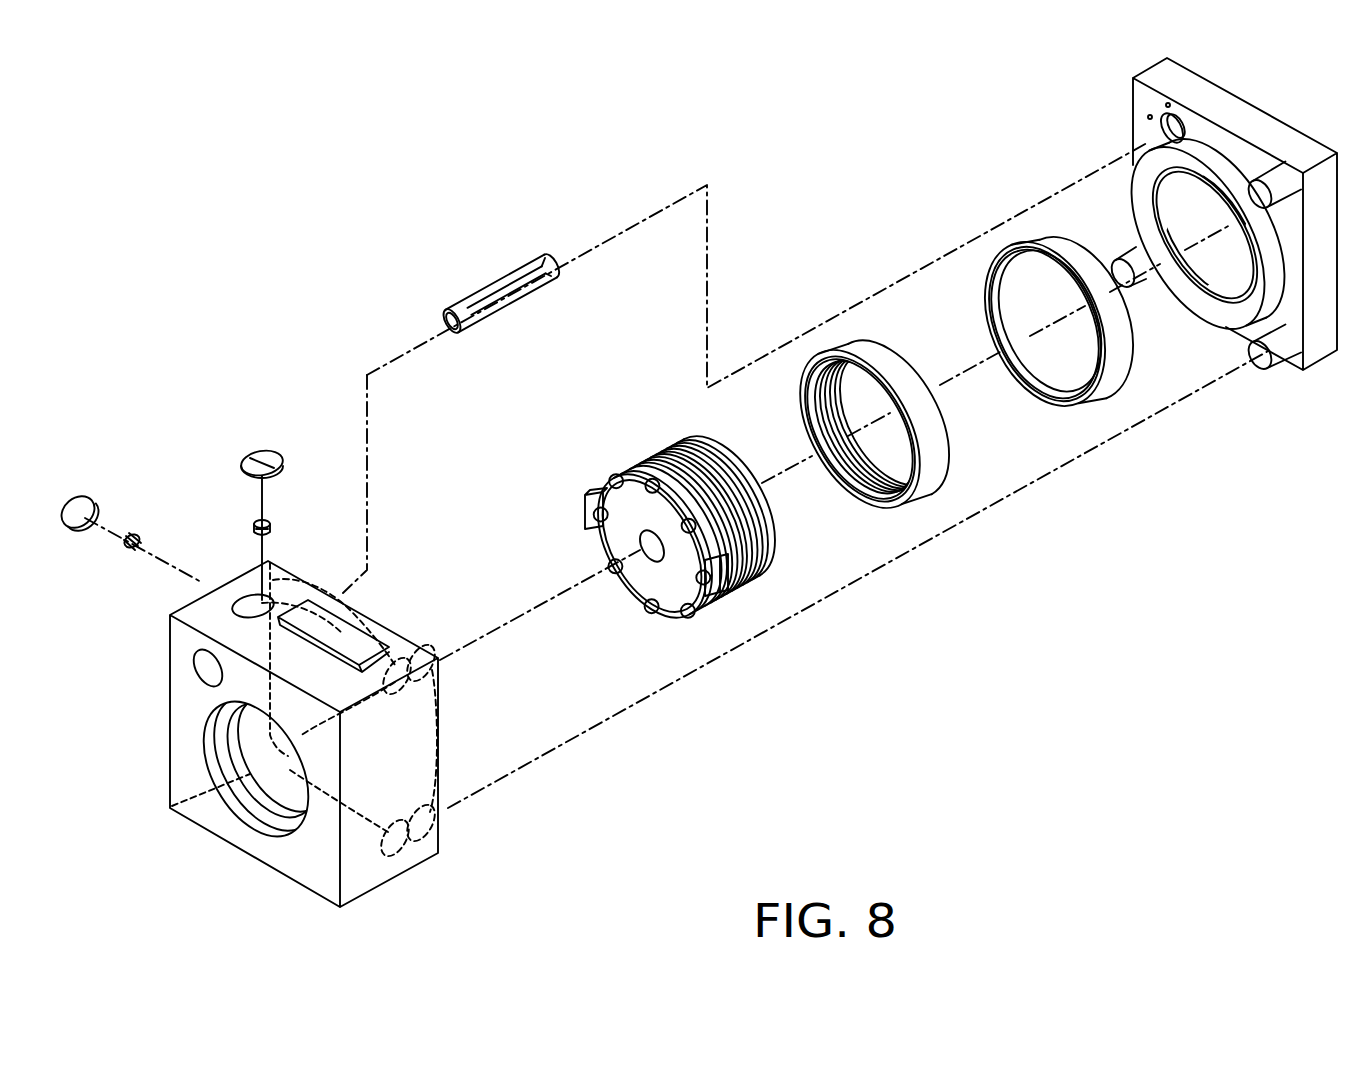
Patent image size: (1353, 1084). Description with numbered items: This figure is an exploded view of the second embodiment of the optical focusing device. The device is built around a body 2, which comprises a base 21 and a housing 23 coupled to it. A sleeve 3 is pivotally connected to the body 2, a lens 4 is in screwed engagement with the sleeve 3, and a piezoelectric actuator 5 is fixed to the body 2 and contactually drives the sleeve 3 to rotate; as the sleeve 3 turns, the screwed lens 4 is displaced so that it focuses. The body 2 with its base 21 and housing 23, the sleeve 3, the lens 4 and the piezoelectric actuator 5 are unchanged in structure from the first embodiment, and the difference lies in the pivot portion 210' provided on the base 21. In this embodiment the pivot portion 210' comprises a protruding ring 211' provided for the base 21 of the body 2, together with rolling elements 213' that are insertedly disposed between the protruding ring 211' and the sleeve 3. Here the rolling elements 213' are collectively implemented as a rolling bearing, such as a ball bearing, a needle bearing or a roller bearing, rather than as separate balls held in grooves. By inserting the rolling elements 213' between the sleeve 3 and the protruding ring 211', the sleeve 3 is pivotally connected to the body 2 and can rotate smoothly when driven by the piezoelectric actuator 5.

The piezoelectric actuator 5 is at (563, 242).
The lens 4 is at (597, 462).
The sleeve 3 is at (967, 469).
The pivot portion 210' is at (985, 260).
The protruding ring 211' is at (1045, 124).
The rolling elements 213' is at (1012, 271).
The body 2 is at (1106, 792).
The housing 23 is at (440, 862).
The base 21 is at (1290, 383).